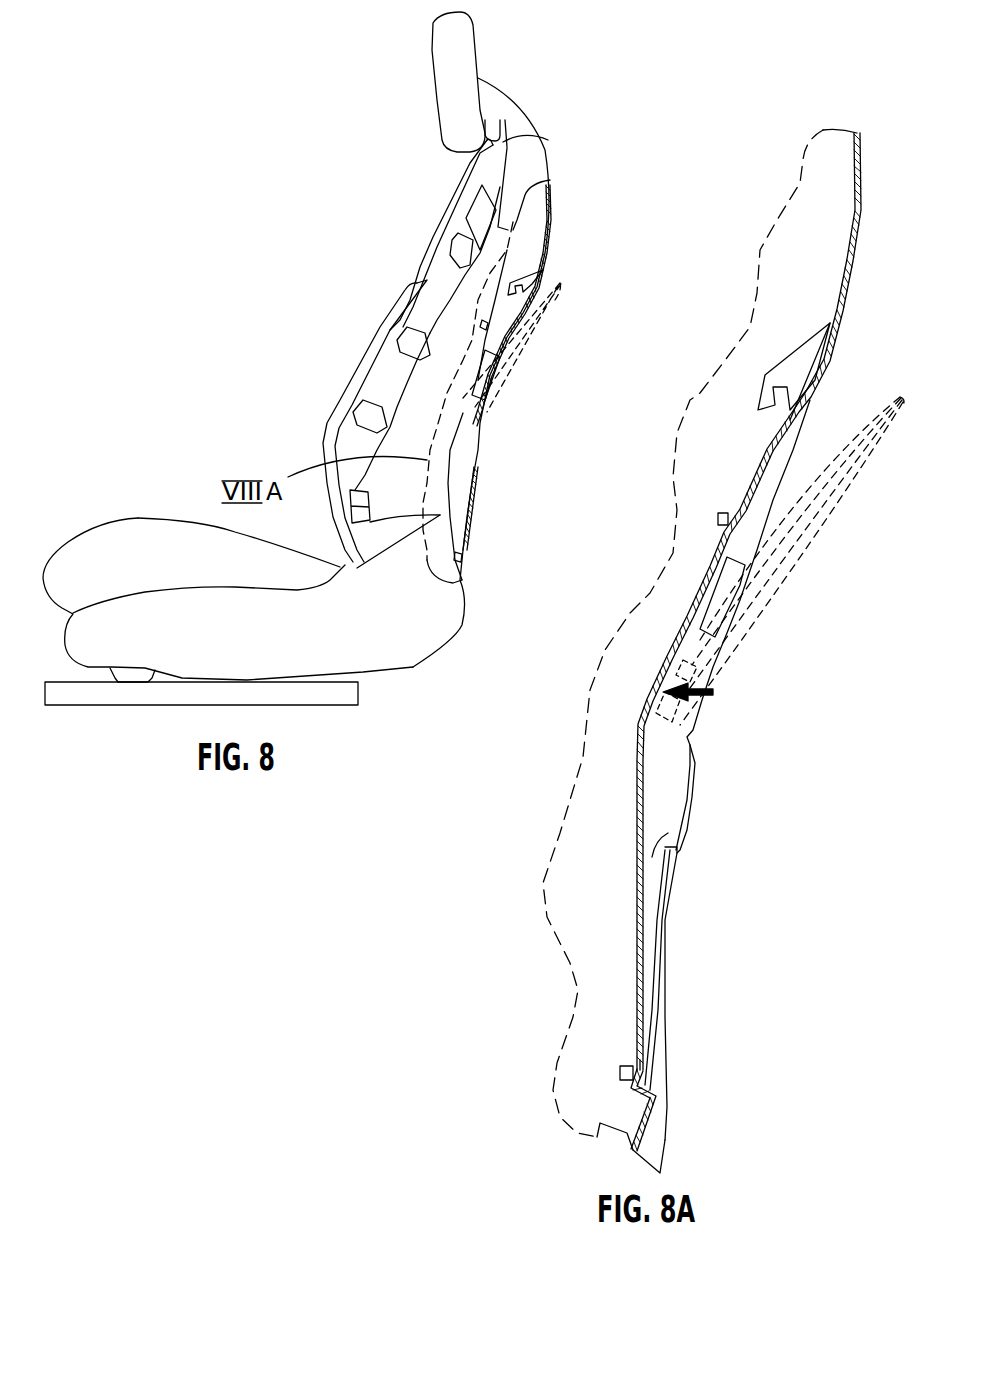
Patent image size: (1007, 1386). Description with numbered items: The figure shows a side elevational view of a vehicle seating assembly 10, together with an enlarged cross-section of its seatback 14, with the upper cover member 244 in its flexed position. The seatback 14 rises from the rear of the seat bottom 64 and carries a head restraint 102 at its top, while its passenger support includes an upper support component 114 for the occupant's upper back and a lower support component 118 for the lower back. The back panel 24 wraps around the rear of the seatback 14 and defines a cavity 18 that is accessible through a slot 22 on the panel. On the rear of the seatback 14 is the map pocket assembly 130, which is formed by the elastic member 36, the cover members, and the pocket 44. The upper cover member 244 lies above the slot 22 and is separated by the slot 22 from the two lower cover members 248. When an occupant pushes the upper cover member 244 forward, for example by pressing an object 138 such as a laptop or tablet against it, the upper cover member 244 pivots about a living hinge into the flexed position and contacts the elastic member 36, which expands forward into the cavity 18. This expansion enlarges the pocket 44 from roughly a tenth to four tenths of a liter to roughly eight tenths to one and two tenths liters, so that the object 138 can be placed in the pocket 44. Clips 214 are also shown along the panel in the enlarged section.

In FIG. 8, the vehicle seating assembly 10 is at (200, 125).
In FIG. 8, the seatback 14 is at (420, 195).
In FIG. 8A, the seatback 14 is at (725, 312).
In FIG. 8A, the cavity 18 is at (601, 837).
In FIG. 8, the slot 22 is at (482, 432).
In FIG. 8A, the slot 22 is at (697, 763).
In FIG. 8, the back panel 24 is at (533, 160).
In FIG. 8A, the back panel 24 is at (852, 230).
In FIG. 8, the elastic member 36 is at (457, 447).
In FIG. 8A, the elastic member 36 is at (643, 793).
In FIG. 8A, the pocket 44 is at (680, 847).
In FIG. 8, the seat bottom 64 is at (140, 518).
In FIG. 8, the head restraint 102 is at (430, 77).
In FIG. 8, the upper support component 114 is at (430, 240).
In FIG. 8, the lower support component 118 is at (348, 375).
In FIG. 8A, the map pocket assembly 130 is at (745, 700).
In FIG. 8, the object 138 is at (553, 300).
In FIG. 8A, the object 138 is at (840, 457).
In FIG. 8A, the fastener clip 214 is at (717, 522).
In FIG. 8, the upper cover member 244 is at (497, 375).
In FIG. 8A, the upper cover member 244 is at (690, 650).
In FIG. 8, the lower cover members 248 is at (470, 527).
In FIG. 8A, the lower cover members 248 is at (653, 1007).